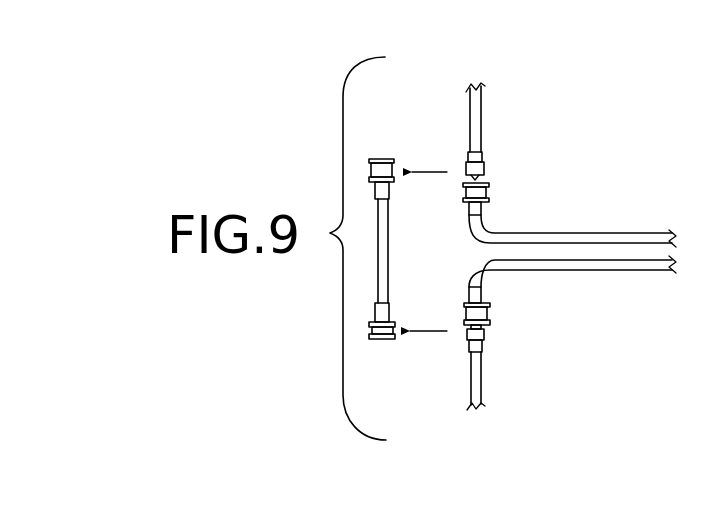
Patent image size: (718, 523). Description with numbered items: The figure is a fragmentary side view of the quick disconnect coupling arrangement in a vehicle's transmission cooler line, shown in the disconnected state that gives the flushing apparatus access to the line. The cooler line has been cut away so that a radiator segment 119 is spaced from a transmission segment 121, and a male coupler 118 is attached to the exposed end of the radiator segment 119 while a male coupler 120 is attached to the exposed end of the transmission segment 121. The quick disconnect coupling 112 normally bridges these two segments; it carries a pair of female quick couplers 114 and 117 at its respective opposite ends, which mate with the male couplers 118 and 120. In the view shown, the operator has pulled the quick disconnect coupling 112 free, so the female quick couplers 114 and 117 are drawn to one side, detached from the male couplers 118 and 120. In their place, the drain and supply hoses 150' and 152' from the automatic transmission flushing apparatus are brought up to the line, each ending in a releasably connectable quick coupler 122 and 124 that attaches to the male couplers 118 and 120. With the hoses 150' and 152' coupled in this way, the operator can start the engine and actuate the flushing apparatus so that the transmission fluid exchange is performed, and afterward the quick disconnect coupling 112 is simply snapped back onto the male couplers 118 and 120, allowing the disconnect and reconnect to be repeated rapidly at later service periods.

The quick disconnect coupling 112 is at (391, 254).
The female quick coupler 114 is at (394, 159).
The female quick coupler 117 is at (392, 339).
The male coupler 118 is at (484, 168).
The radiator segment 119 is at (482, 104).
The male coupler 120 is at (485, 337).
The transmission segment 121 is at (483, 388).
The quick coupler 122 is at (489, 190).
The quick coupler 124 is at (489, 311).
The hose 150' is at (572, 223).
The hose 152' is at (572, 284).